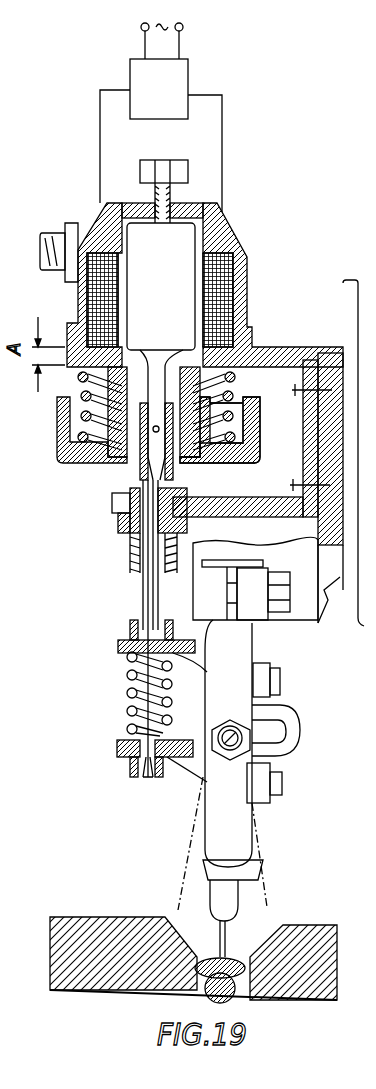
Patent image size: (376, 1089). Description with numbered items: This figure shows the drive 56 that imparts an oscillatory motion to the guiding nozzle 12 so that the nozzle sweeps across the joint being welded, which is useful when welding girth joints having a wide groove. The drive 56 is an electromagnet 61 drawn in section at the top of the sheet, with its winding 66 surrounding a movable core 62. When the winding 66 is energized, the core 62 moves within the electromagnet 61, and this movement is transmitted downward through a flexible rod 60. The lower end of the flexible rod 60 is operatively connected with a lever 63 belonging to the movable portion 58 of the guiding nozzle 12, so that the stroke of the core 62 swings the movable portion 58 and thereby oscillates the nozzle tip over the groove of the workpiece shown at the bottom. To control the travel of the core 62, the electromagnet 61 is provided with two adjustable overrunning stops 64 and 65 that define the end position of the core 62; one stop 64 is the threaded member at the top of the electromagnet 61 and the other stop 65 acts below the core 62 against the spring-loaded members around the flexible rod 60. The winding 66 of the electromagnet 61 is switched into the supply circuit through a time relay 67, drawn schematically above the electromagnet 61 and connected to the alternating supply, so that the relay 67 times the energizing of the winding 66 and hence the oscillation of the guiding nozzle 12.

The time relay 67 is at (178, 85).
The adjustable overrunning stop 64 is at (171, 192).
The drive 56 is at (191, 280).
The electromagnet 61 is at (248, 260).
The winding 66 is at (231, 308).
The movable core 62 is at (135, 298).
The adjustable overrunning stop 65 is at (108, 453).
The flexible rod 60 is at (150, 590).
The lever 63 is at (177, 762).
The movable portion 58 is at (235, 835).
The guiding nozzle 12 is at (203, 827).